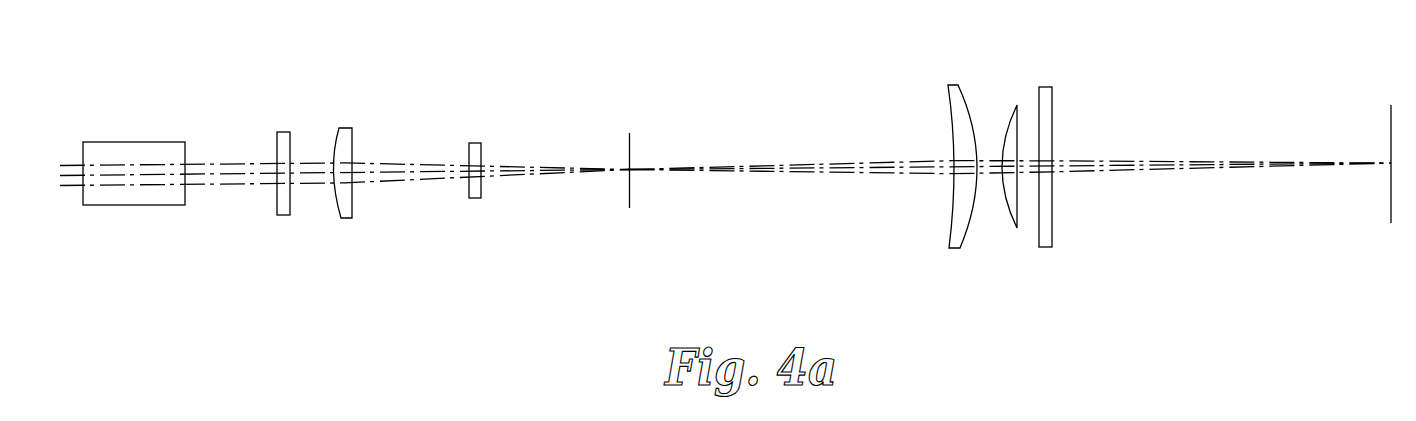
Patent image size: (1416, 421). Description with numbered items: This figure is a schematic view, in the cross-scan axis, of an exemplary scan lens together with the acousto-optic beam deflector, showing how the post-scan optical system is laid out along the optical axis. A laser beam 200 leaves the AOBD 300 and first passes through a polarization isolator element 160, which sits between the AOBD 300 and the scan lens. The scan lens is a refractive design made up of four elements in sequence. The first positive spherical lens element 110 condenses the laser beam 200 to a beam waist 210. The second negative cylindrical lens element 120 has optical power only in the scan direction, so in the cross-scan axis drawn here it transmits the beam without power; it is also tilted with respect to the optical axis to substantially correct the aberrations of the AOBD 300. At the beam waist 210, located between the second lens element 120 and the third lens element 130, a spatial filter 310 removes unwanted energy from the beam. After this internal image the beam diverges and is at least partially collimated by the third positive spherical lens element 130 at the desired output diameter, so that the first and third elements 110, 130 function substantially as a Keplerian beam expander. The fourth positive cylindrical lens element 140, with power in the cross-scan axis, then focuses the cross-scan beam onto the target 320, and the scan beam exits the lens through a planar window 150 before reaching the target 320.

The laser beam 200 is at (70, 158).
The beam waist 210 is at (620, 157).
The AOBD 300 is at (165, 207).
The polarization isolator element 160 is at (282, 217).
The first positive spherical lens element 110 is at (345, 218).
The second negative cylindrical lens element 120 is at (475, 200).
The spatial filter 310 is at (630, 213).
The third positive spherical lens element 130 is at (952, 252).
The fourth positive cylindrical lens element 140 is at (1006, 100).
The planar window 150 is at (1047, 247).
The target 320 is at (1382, 195).